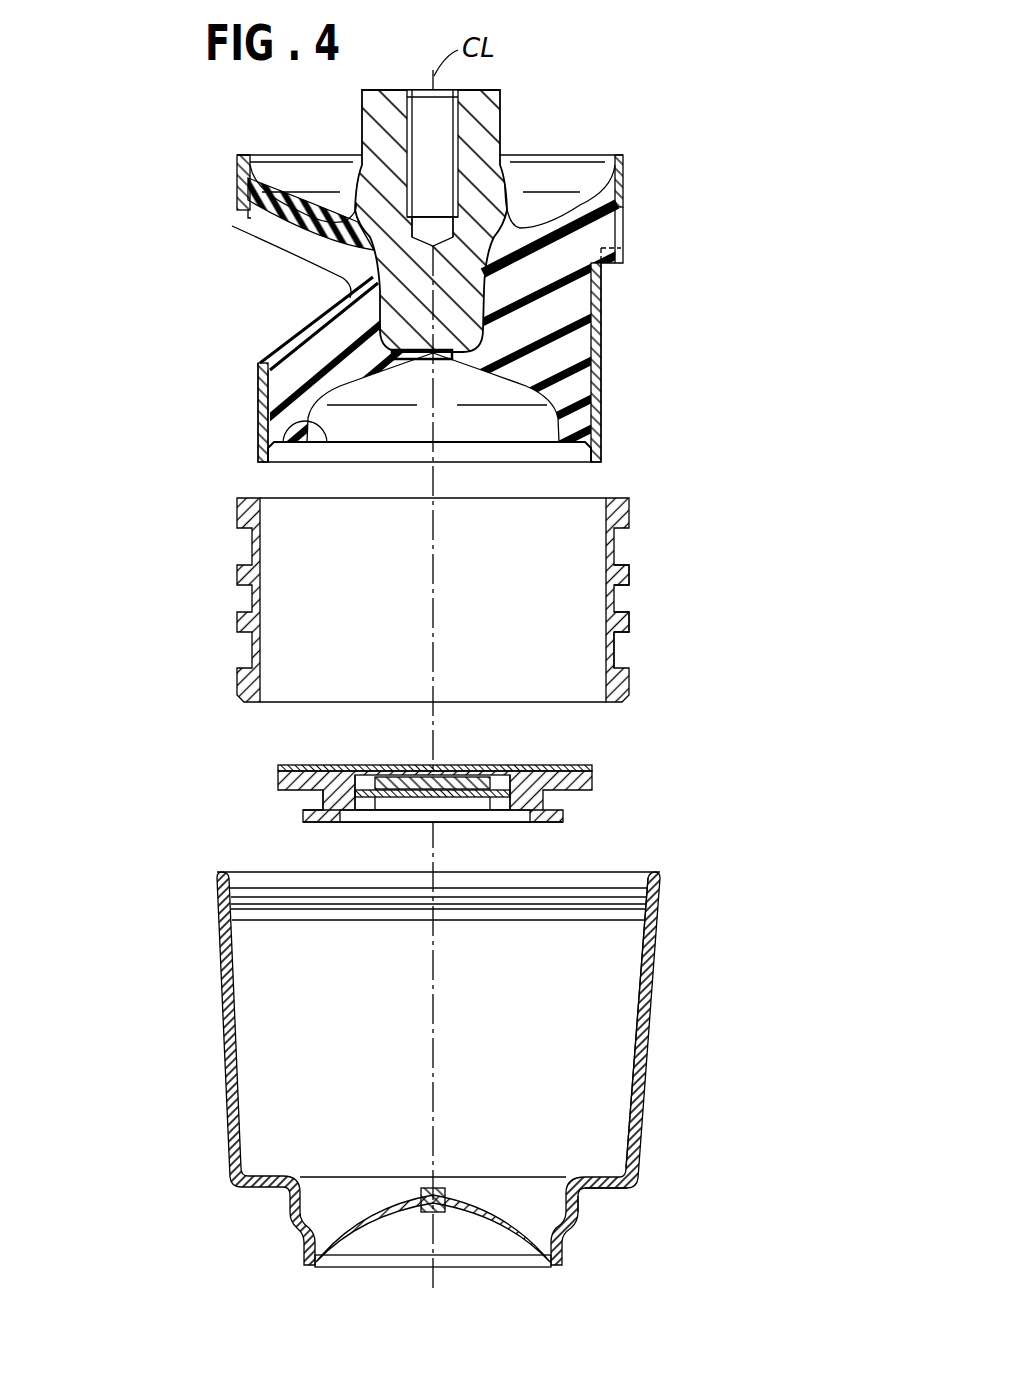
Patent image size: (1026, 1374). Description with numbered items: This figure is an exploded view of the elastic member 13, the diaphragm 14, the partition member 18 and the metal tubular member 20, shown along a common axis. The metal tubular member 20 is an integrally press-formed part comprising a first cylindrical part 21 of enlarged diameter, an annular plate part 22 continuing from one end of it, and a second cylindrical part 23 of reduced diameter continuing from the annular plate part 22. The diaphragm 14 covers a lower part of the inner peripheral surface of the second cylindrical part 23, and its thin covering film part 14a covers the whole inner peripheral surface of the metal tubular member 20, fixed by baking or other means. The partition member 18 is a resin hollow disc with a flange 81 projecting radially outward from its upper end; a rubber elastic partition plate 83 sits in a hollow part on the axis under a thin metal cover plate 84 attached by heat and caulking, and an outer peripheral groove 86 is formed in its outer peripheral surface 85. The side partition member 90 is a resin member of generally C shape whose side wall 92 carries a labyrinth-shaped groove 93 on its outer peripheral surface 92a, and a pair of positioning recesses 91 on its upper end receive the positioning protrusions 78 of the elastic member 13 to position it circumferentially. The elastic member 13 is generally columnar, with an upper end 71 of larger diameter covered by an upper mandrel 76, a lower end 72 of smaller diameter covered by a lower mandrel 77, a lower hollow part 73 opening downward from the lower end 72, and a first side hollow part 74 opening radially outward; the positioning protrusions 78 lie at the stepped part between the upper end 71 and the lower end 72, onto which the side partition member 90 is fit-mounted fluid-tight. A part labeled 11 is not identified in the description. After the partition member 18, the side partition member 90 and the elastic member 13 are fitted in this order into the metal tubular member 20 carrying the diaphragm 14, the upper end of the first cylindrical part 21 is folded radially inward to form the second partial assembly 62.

The bolt 11 is at (488, 103).
The elastic member 13 is at (218, 155).
The diaphragm 14 is at (388, 1224).
The covering film part 14a is at (632, 1012).
The partition member 18 is at (222, 806).
The metal tubular member 20 is at (172, 951).
The first cylindrical part 21 is at (645, 1058).
The annular plate part 22 is at (605, 1192).
The second cylindrical part 23 is at (578, 1213).
The partial assembly 62 is at (786, 142).
The upper end 71 is at (248, 206).
The lower end 72 is at (290, 372).
The lower hollow part 73 is at (305, 452).
The first side hollow part 74 is at (333, 255).
The upper mandrel 76 is at (238, 170).
The lower mandrel 77 is at (268, 416).
The positioning protrusions 78 is at (625, 258).
The flange 81 is at (595, 780).
The elastic partition plate 83 is at (477, 780).
The cover plate 84 is at (585, 767).
The outer peripheral surface 85 is at (566, 813).
The outer peripheral groove 86 is at (320, 795).
The side partition member 90 is at (178, 553).
The positioning recesses 91 is at (618, 504).
The side wall 92 is at (622, 577).
The outer peripheral surface 92a is at (622, 622).
The labyrinth-shaped groove 93 is at (614, 648).